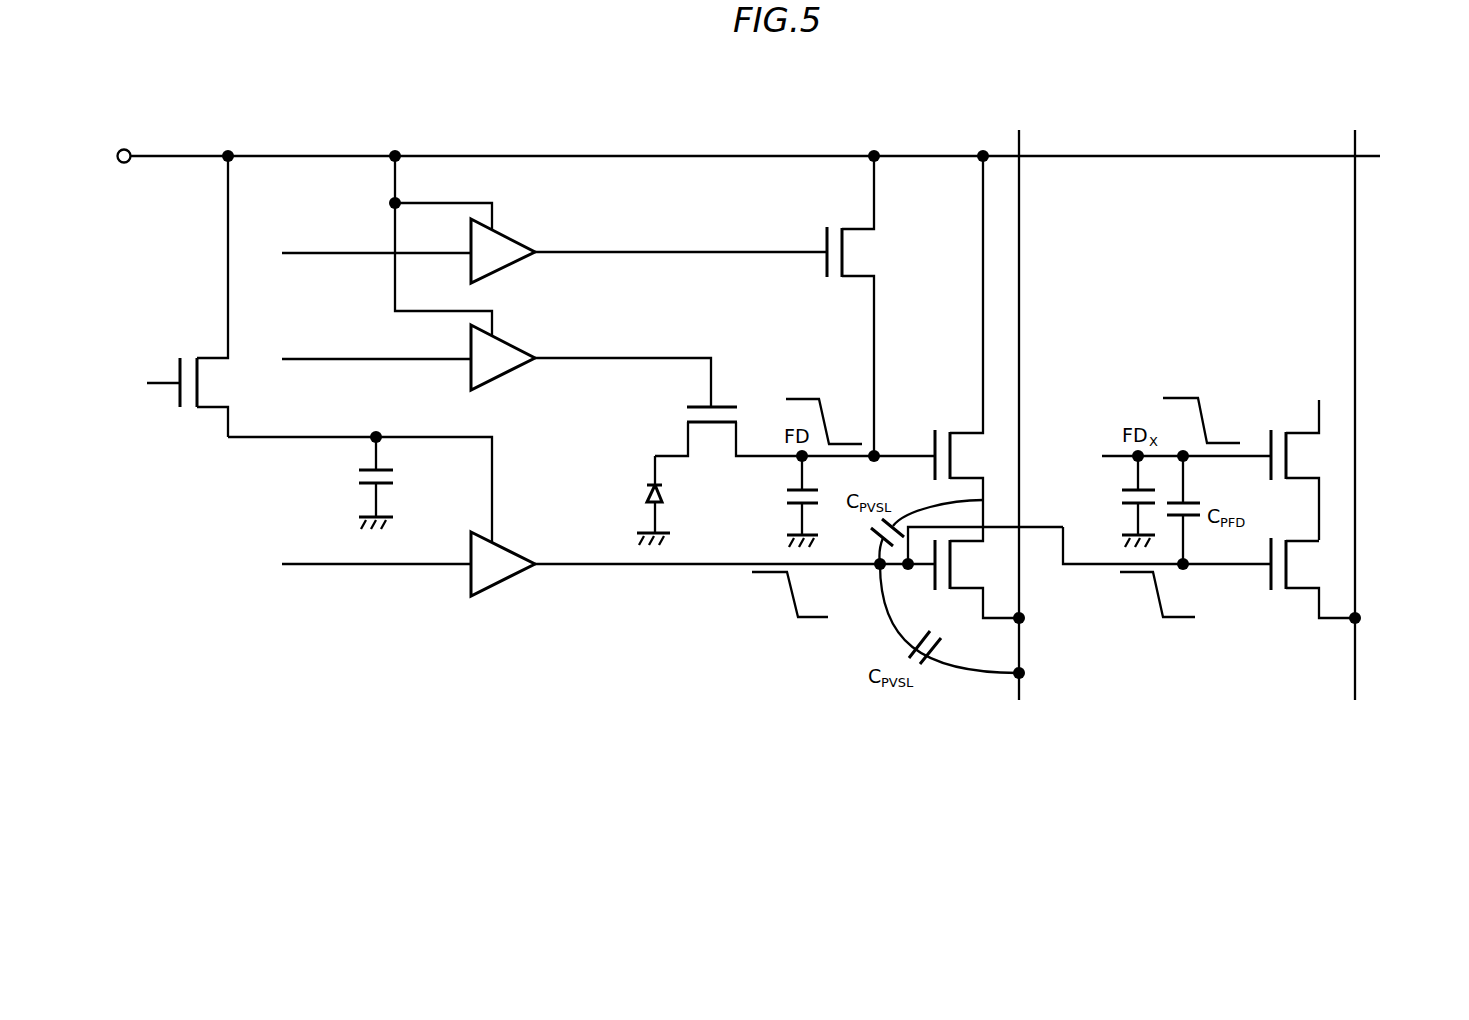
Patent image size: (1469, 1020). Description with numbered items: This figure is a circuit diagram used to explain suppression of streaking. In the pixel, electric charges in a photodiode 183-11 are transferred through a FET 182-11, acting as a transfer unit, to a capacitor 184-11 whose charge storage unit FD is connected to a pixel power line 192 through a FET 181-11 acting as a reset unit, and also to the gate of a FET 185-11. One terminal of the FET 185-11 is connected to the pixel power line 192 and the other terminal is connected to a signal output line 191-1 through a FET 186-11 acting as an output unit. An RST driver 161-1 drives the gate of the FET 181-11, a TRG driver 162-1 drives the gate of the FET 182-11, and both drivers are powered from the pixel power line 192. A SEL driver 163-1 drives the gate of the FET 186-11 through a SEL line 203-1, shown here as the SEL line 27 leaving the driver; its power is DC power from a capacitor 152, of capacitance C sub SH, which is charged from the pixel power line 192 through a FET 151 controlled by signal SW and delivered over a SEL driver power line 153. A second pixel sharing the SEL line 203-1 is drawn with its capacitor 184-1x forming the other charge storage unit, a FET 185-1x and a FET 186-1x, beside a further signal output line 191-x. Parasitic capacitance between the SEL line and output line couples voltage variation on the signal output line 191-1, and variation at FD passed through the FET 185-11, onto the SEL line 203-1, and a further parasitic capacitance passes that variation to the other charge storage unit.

The pixel power line 192 is at (634, 153).
The FET 151 is at (188, 410).
The capacitor 152 is at (393, 478).
The SEL driver power line 153 is at (413, 432).
The RST driver 161-1 is at (502, 242).
The TRG driver 162-1 is at (502, 347).
The SEL driver 163-1 is at (502, 553).
The FET 181-11 is at (822, 240).
The FET 182-11 is at (683, 415).
The photodiode 183-11 is at (650, 486).
The capacitor 184-11 is at (788, 490).
The FET 185-11 is at (935, 434).
The FET 186-11 is at (937, 588).
The signal output line 191-1 is at (1019, 252).
The signal output line 191-x is at (1355, 252).
The SEL line 203-1 is at (1087, 567).
The capacitor 184-1x is at (1122, 490).
The FET 185-1x is at (1280, 428).
The FET 186-1x is at (1280, 592).
The SEL line 27 is at (672, 568).